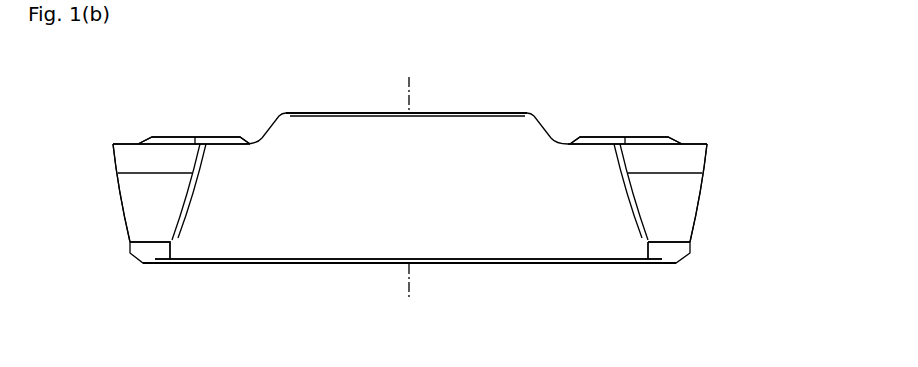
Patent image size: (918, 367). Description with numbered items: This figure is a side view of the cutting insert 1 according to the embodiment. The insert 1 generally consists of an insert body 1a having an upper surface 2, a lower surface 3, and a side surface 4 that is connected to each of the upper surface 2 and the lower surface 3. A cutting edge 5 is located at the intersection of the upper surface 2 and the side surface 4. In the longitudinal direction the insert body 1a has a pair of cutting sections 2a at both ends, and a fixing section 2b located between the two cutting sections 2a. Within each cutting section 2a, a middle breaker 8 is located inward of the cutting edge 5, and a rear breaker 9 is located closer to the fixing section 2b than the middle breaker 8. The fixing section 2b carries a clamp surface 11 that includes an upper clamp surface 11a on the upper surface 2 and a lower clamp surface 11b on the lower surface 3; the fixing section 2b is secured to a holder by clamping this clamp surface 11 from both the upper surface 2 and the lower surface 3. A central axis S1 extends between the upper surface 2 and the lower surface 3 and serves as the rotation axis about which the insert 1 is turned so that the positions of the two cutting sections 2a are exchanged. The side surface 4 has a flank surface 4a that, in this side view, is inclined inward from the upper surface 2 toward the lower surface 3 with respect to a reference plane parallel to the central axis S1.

The insert 1 is at (447, 174).
The insert body 1a is at (720, 139).
The upper surface 2 is at (407, 241).
The cutting section 2a is at (275, 58).
The fixing section 2b is at (545, 58).
The lower surface 3 is at (562, 267).
The side surface 4 is at (492, 234).
The flank surface 4a is at (118, 197).
The cutting edge 5 is at (115, 140).
The middle breaker 8 is at (174, 137).
The rear breaker 9 is at (226, 137).
The clamp surface 11 is at (409, 188).
The upper clamp surface 11a is at (441, 113).
The lower clamp surface 11b is at (387, 263).
The central axis S1 is at (404, 94).